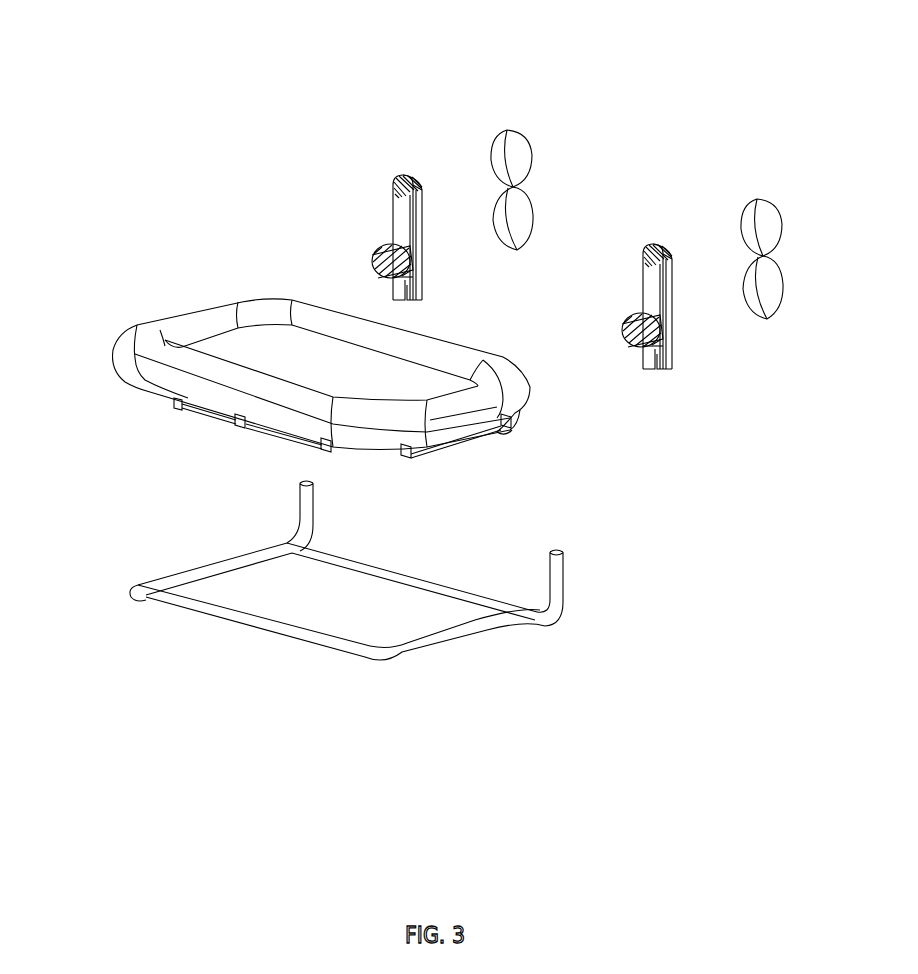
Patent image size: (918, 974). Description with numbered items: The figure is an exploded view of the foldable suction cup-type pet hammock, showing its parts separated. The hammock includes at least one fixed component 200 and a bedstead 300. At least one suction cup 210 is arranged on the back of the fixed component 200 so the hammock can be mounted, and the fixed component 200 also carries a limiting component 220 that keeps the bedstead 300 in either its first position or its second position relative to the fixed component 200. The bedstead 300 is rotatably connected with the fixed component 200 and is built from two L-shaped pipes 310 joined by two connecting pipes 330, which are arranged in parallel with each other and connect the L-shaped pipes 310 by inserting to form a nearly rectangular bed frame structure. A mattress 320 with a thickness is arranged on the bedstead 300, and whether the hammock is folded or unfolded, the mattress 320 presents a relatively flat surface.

The fixed component 200 is at (290, 156).
The suction cup 210 is at (517, 155).
The limiting component 220 is at (388, 260).
The bedstead 300 is at (410, 654).
The L-shaped pipe 310 is at (489, 663).
The mattress 320 is at (472, 393).
The connecting pipe 330 is at (275, 622).